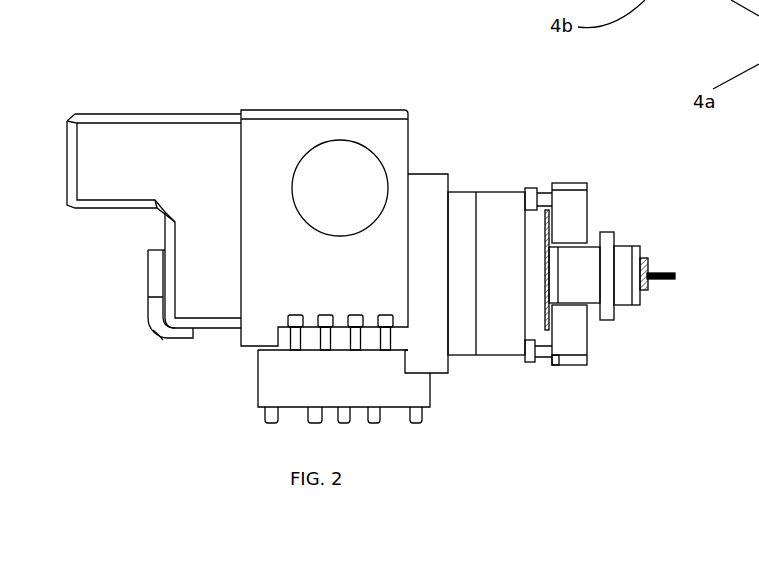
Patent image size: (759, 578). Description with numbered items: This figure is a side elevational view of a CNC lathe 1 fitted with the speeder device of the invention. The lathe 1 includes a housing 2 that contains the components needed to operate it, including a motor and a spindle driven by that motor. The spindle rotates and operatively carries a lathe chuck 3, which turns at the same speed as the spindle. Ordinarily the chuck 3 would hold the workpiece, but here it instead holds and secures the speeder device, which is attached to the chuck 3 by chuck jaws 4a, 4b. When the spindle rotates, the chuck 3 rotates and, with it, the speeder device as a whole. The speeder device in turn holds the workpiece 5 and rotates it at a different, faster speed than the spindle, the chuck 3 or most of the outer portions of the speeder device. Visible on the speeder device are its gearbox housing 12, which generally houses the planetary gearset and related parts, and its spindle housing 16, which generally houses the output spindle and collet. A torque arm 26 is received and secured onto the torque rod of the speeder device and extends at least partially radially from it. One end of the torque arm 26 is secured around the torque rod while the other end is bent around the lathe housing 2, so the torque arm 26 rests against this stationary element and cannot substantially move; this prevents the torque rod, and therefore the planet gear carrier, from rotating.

The CNC lathe 1 is at (371, 98).
The housing 2 is at (263, 128).
The lathe chuck 3 is at (487, 345).
The chuck jaw 4a is at (590, 358).
The chuck jaw 4b is at (572, 213).
The workpiece 5 is at (672, 283).
The gearbox housing 12 is at (592, 297).
The spindle housing 16 is at (622, 250).
The torque arm 26 is at (163, 341).